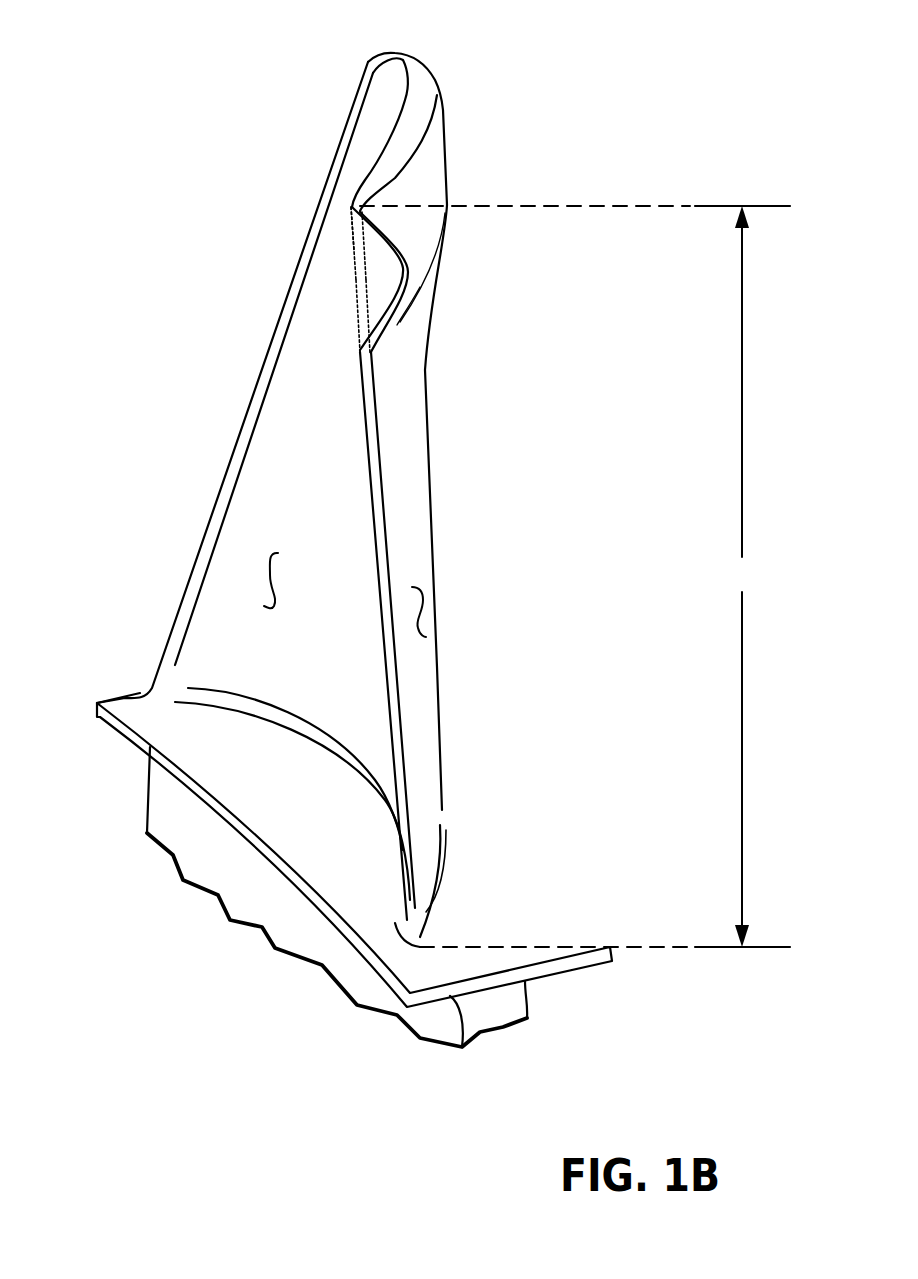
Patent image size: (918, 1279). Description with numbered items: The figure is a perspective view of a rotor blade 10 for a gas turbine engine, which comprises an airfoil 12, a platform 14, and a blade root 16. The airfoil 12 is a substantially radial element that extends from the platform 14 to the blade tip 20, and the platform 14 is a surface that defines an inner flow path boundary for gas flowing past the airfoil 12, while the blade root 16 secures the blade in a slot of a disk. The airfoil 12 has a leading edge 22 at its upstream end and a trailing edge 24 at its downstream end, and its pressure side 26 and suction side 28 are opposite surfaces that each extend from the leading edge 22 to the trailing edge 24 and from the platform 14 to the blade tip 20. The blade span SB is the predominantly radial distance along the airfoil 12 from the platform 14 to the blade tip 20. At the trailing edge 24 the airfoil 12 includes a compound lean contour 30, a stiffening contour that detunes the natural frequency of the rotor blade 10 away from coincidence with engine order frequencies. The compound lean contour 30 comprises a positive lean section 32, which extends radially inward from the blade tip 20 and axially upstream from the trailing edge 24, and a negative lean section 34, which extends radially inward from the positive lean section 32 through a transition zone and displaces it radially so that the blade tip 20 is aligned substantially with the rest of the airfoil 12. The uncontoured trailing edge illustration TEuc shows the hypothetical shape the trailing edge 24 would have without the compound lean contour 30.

The rotor blade 10 is at (582, 76).
The airfoil 12 is at (470, 685).
The platform 14 is at (113, 717).
The blade root 16 is at (176, 836).
The blade tip 20 is at (410, 73).
The leading edge 22 is at (230, 450).
The trailing edge 24 is at (400, 760).
The pressure side 26 is at (268, 585).
The suction side 28 is at (428, 617).
The compound lean contour 30 is at (563, 206).
The positive lean section 32 is at (495, 206).
The negative lean section 34 is at (495, 277).
The uncontoured trailing edge illustration TEuc is at (353, 257).
The blade span SB is at (575, 576).